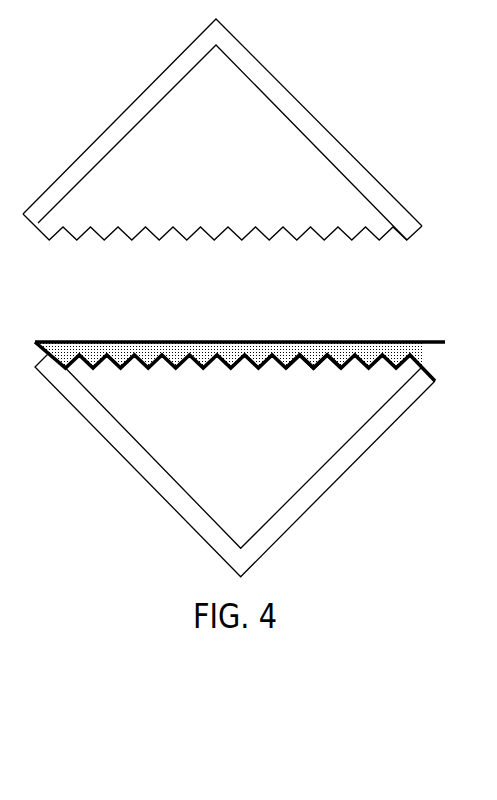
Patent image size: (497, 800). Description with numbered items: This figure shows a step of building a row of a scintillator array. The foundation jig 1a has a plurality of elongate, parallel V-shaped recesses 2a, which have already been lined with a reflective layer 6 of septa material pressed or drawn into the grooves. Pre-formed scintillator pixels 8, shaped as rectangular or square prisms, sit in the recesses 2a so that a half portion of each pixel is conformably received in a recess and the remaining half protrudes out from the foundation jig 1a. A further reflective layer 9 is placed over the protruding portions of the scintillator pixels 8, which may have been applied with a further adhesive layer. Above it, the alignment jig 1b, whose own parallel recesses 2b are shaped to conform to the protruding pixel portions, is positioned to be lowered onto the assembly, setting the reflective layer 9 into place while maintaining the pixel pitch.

The foundation jig 1a is at (250, 456).
The alignment jig 1b is at (250, 148).
The recesses 2a is at (163, 362).
The recesses 2b is at (193, 232).
The reflective layer 6 is at (305, 362).
The scintillator pixels 8 is at (258, 345).
The reflective layer 9 is at (407, 340).